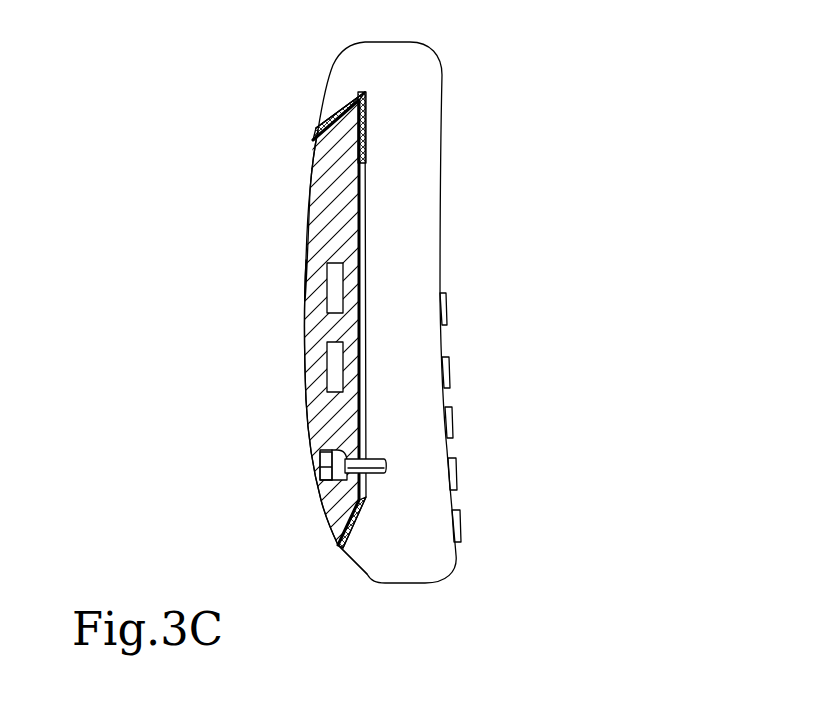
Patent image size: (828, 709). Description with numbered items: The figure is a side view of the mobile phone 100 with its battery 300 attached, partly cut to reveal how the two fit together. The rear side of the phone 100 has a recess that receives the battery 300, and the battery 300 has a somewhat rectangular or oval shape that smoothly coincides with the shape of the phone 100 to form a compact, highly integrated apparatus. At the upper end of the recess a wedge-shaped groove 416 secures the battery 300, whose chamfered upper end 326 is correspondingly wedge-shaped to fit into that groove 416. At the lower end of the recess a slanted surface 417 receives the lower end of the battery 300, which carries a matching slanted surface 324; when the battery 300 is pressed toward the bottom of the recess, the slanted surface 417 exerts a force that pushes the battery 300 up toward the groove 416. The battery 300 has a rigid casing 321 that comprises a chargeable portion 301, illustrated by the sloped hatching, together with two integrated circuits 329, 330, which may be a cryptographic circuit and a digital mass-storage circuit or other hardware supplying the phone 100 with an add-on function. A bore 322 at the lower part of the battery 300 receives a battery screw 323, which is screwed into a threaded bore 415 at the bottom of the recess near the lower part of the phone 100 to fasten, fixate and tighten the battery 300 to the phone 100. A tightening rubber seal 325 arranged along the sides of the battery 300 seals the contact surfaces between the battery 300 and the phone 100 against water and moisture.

The mobile phone 100 is at (557, 108).
The battery 300 is at (308, 212).
The chargeable portion 301 is at (323, 248).
The rigid casing 321 is at (312, 408).
The bore 322 is at (323, 449).
The battery screw 323 is at (332, 465).
The slanted surface 324 is at (336, 528).
The tightening rubber seal 325 is at (340, 550).
The chamfered upper end 326 is at (326, 139).
The integrated circuit 329 is at (333, 295).
The integrated circuit 330 is at (332, 373).
The threaded bore 415 is at (378, 458).
The wedge-shaped groove 416 is at (347, 101).
The slanted surface 417 is at (352, 537).